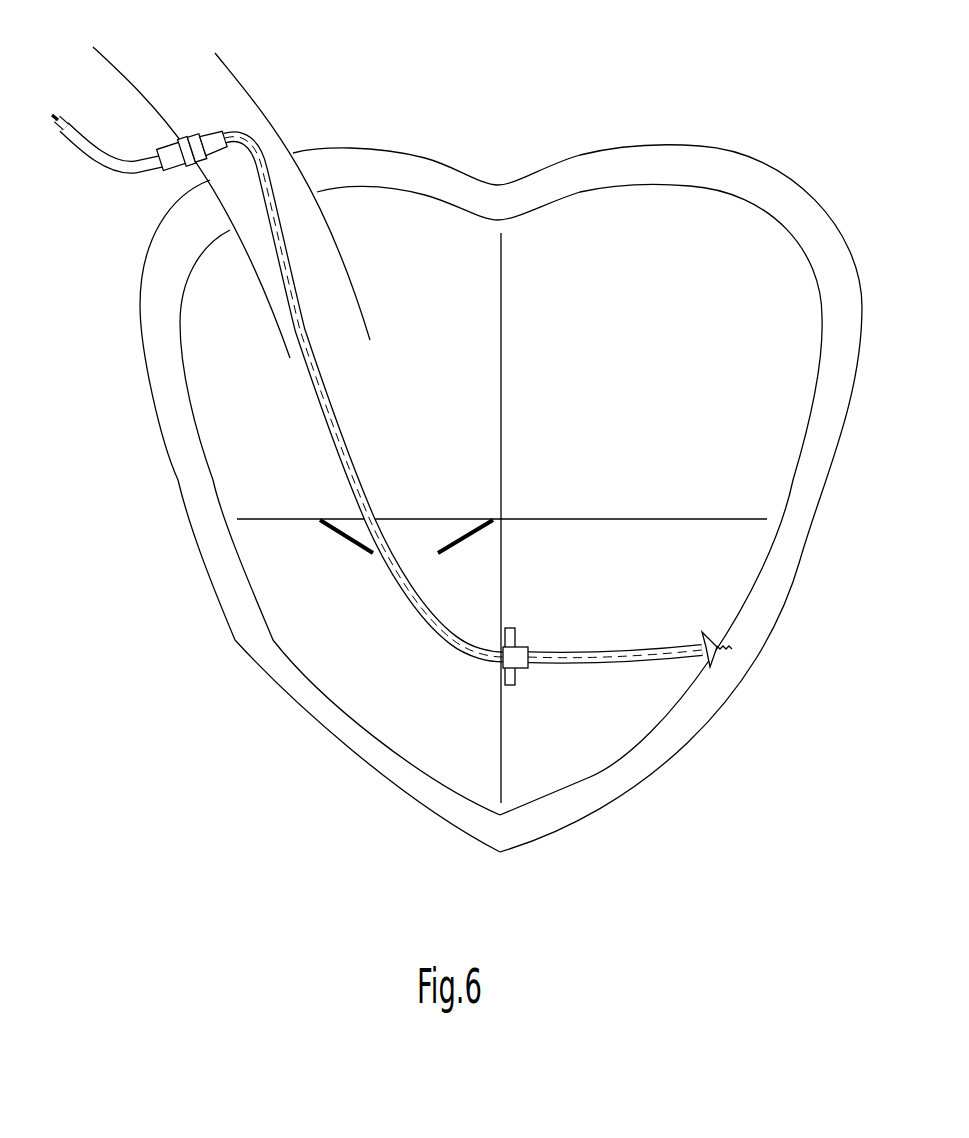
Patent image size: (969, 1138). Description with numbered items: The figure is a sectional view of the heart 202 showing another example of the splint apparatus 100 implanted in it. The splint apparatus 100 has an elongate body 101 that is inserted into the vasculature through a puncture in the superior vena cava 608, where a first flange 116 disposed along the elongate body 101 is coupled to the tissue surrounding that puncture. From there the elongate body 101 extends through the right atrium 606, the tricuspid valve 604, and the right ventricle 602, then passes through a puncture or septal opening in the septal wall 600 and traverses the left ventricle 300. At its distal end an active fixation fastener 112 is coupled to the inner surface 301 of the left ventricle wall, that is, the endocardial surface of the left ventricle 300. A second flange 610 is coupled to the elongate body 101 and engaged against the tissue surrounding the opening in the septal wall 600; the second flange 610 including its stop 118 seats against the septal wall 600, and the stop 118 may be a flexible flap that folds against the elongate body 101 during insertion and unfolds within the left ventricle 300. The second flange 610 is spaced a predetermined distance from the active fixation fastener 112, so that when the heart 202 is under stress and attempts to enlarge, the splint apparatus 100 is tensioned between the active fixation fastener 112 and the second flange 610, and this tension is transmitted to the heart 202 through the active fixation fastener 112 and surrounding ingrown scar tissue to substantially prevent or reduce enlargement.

The splint apparatus 100 is at (103, 170).
The elongate body 101 is at (397, 580).
The active fixation fastener 112 is at (720, 643).
The first flange 116 is at (180, 147).
The stop 118 is at (513, 637).
The heart 202 is at (415, 802).
The left ventricle 300 is at (707, 578).
The inner surface 301 is at (708, 705).
The septal wall 600 is at (503, 737).
The right ventricle 602 is at (353, 685).
The tricuspid valve 604 is at (330, 523).
The right atrium 606 is at (230, 442).
The superior vena cava 608 is at (250, 115).
The second flange 610 is at (523, 670).